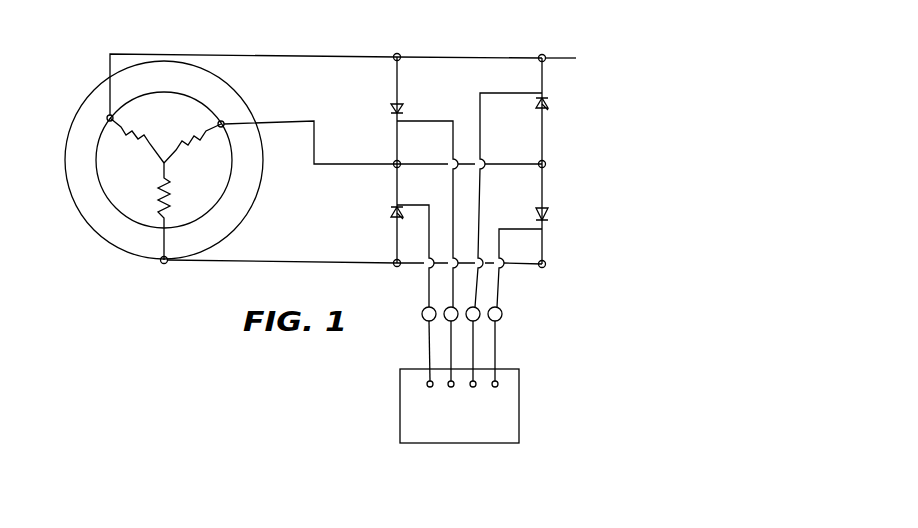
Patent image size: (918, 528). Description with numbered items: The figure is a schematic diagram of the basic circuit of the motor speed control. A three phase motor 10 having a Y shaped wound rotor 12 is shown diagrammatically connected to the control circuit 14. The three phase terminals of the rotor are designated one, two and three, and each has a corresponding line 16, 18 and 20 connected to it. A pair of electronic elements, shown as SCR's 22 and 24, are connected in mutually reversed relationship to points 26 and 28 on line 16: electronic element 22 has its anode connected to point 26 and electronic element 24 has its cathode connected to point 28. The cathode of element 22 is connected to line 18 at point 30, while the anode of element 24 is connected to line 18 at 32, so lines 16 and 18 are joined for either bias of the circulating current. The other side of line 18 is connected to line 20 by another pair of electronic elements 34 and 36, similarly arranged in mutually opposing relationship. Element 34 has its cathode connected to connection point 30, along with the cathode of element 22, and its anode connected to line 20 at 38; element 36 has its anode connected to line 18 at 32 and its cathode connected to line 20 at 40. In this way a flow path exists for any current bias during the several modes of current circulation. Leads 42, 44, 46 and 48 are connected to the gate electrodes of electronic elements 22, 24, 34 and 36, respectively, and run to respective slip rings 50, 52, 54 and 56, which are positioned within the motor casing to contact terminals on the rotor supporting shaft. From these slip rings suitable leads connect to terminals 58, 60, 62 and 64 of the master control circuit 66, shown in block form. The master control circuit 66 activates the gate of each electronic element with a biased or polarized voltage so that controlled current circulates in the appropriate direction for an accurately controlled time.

The three phase motor 10 is at (96, 89).
The Y shaped wound rotor 12 is at (97, 163).
The control circuit 14 is at (473, 57).
The line 16 is at (247, 54).
The line 18 is at (305, 121).
The line 20 is at (304, 260).
The electronic element (SCR) 22 is at (393, 107).
The electronic element (SCR) 24 is at (548, 109).
The point 26 is at (394, 55).
The point 28 is at (573, 59).
The point 30 is at (394, 162).
The point 32 is at (547, 166).
The electronic element 34 is at (393, 208).
The electronic element 36 is at (547, 217).
The point 38 is at (394, 266).
The point 40 is at (547, 267).
The lead 42 is at (446, 121).
The lead 44 is at (502, 94).
The lead 46 is at (414, 205).
The lead 48 is at (498, 229).
The slip ring 50 is at (422, 315).
The slip ring 52 is at (447, 322).
The slip ring 54 is at (477, 320).
The slip ring 56 is at (501, 318).
The terminal 58 is at (427, 384).
The terminal 60 is at (453, 387).
The terminal 62 is at (475, 387).
The terminal 64 is at (498, 386).
The master control circuit 66 is at (457, 426).